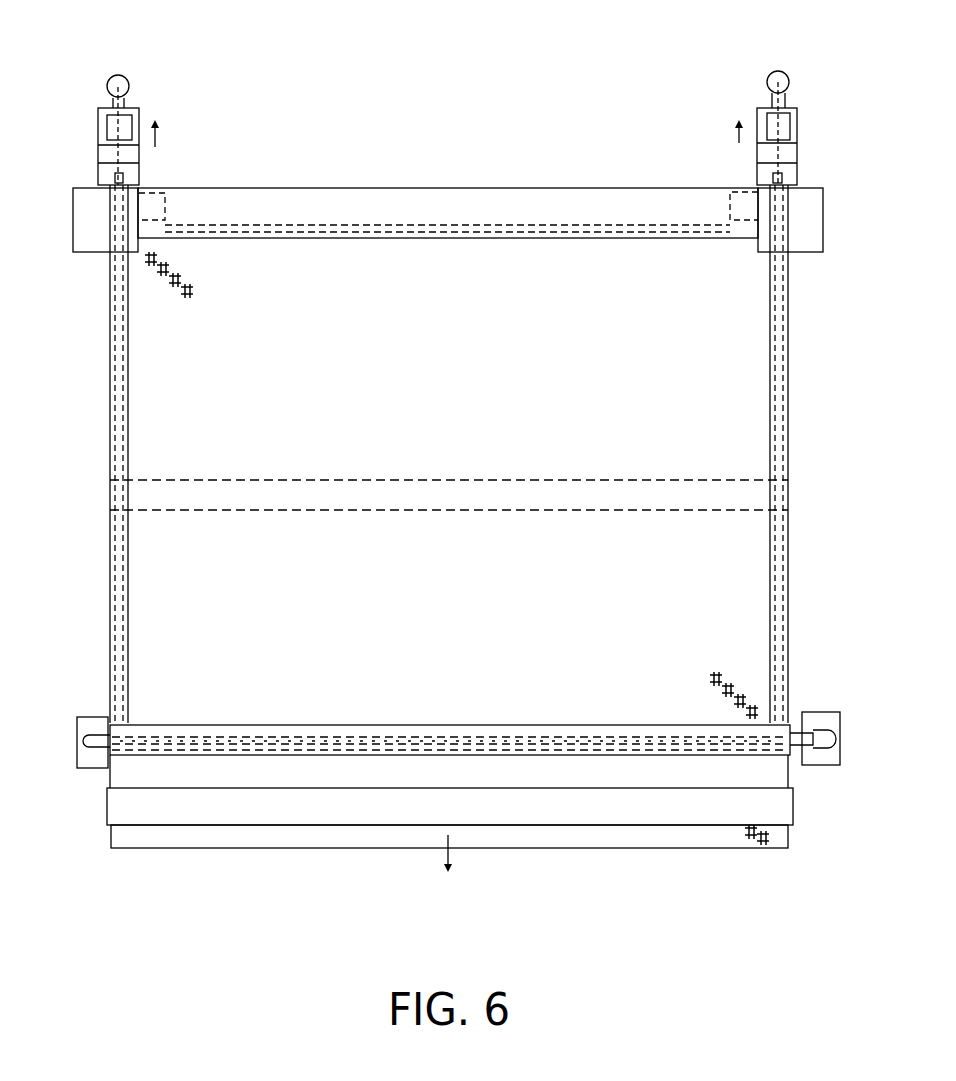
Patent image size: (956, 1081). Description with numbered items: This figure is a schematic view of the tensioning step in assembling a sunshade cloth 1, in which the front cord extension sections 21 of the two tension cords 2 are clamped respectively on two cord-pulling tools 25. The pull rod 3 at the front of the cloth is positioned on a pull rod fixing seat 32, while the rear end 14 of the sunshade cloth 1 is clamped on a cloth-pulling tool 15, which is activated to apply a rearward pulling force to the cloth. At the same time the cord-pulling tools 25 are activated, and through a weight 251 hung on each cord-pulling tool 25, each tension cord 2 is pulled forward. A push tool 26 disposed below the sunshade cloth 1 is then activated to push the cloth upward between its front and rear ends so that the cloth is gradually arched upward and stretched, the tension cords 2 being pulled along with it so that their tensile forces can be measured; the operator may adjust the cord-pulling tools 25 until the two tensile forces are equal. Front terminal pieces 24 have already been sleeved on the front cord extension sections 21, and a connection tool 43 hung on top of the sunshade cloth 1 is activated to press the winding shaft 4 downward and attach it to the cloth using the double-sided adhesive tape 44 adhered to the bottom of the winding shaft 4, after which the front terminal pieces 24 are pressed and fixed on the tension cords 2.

The sunshade cloth 1 is at (212, 622).
The tension cord 2 is at (136, 157).
The pull rod 3 is at (427, 207).
The winding shaft 4 is at (277, 752).
The rear end 14 is at (538, 837).
The cloth-pulling tool 15 is at (338, 810).
The front cord extension section 21 is at (105, 150).
The front terminal piece 24 is at (115, 178).
The cord-pulling tool 25 is at (104, 101).
The push tool 26 is at (218, 500).
The pull rod fixing seat 32 is at (93, 227).
The connection tool 43 is at (93, 765).
The double-sided adhesive tape 44 is at (630, 745).
The weight 251 is at (127, 78).